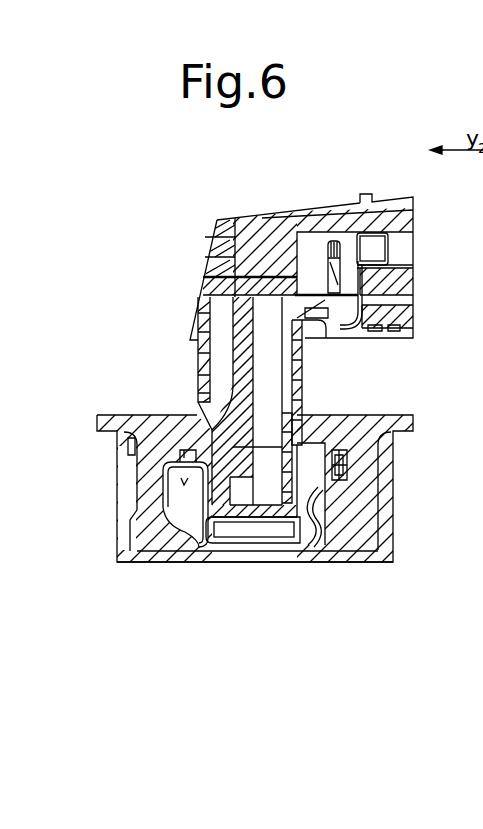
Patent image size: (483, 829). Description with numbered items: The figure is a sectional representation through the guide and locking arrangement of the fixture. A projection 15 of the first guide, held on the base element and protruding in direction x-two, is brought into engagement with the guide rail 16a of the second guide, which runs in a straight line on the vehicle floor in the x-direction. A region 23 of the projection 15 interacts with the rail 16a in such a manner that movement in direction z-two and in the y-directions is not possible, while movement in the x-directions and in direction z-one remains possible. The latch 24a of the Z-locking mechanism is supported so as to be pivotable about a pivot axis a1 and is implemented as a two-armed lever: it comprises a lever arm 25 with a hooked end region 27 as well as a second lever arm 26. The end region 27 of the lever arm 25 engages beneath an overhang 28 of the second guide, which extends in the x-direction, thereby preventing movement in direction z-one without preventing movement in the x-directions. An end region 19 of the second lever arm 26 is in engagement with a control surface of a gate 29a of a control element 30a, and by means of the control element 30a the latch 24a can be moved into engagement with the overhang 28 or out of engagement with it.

The projection 15 is at (305, 433).
The guide rail 16a is at (200, 520).
The end region 19 is at (362, 337).
The region 23 is at (278, 530).
The latch 24a is at (220, 330).
The lever arm 25 is at (200, 430).
The lever arm 26 is at (311, 288).
The hooked end region 27 is at (170, 437).
The overhang 28 is at (193, 431).
The gate 29a is at (352, 295).
The control element 30a is at (343, 340).
The pivot axis a1 is at (262, 300).